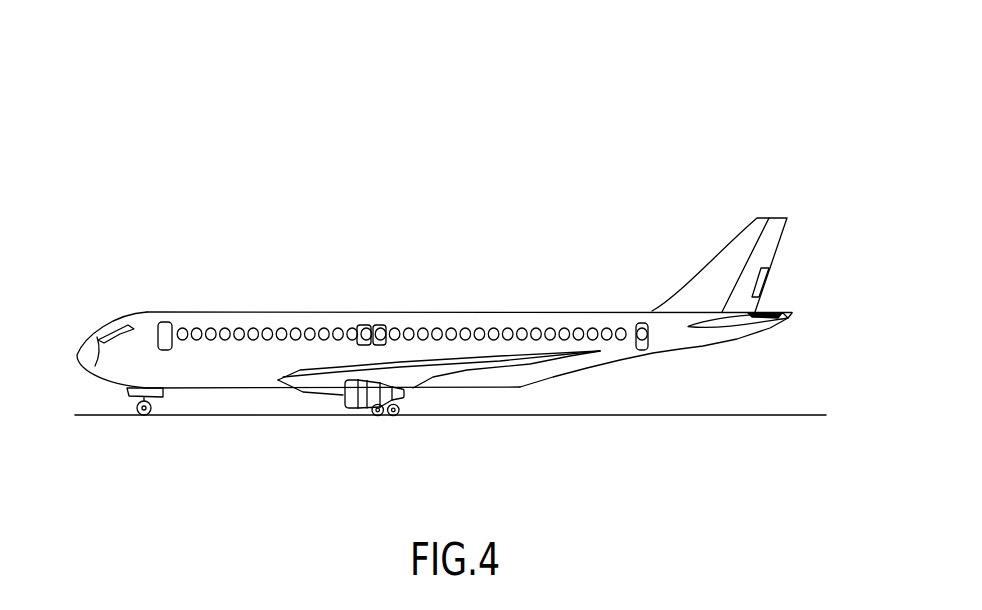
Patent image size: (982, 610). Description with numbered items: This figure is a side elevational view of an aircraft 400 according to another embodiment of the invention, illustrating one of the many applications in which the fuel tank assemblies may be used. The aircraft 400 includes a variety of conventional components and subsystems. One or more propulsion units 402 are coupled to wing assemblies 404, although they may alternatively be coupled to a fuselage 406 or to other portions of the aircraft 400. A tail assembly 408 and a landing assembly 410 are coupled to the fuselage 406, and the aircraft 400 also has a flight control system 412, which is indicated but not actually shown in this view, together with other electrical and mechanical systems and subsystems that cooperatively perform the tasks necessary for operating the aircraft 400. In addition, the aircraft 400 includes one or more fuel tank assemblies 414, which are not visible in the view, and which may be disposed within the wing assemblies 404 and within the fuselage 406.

The aircraft 400 is at (602, 182).
The propulsion unit 402 is at (352, 403).
The wing assembly 404 is at (455, 372).
The fuselage 406 is at (413, 312).
The tail assembly 408 is at (802, 283).
The landing assembly 410 is at (142, 417).
The flight control system 412 is at (106, 348).
The fuel tank assembly 414 is at (292, 369).